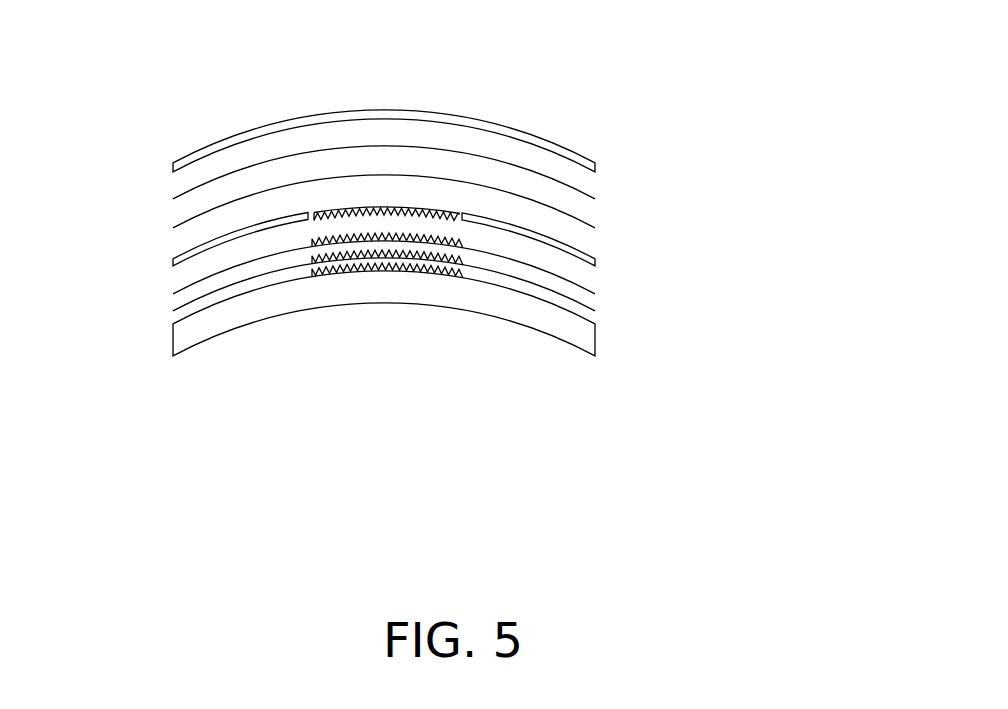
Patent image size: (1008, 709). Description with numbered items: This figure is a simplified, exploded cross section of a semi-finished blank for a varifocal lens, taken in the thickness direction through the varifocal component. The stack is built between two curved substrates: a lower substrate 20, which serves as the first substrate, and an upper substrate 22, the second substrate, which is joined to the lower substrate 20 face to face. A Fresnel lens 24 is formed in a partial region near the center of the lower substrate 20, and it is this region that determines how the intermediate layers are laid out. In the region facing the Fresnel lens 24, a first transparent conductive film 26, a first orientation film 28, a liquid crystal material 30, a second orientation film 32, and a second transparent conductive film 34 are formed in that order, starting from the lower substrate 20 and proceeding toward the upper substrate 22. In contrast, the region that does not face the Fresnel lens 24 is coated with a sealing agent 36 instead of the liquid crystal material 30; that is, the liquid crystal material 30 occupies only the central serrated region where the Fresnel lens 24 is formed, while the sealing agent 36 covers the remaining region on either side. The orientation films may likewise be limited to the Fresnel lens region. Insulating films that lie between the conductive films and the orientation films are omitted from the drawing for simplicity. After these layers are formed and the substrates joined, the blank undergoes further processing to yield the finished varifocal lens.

The lower substrate 20 is at (468, 384).
The upper substrate 22 is at (537, 136).
The Fresnel lens 24 is at (441, 285).
The first transparent conductive film 26 is at (594, 309).
The first orientation film 28 is at (594, 293).
The liquid crystal material 30 is at (338, 213).
The second orientation film 32 is at (594, 225).
The second transparent conductive film 34 is at (594, 197).
The sealing agent 36 is at (485, 226).